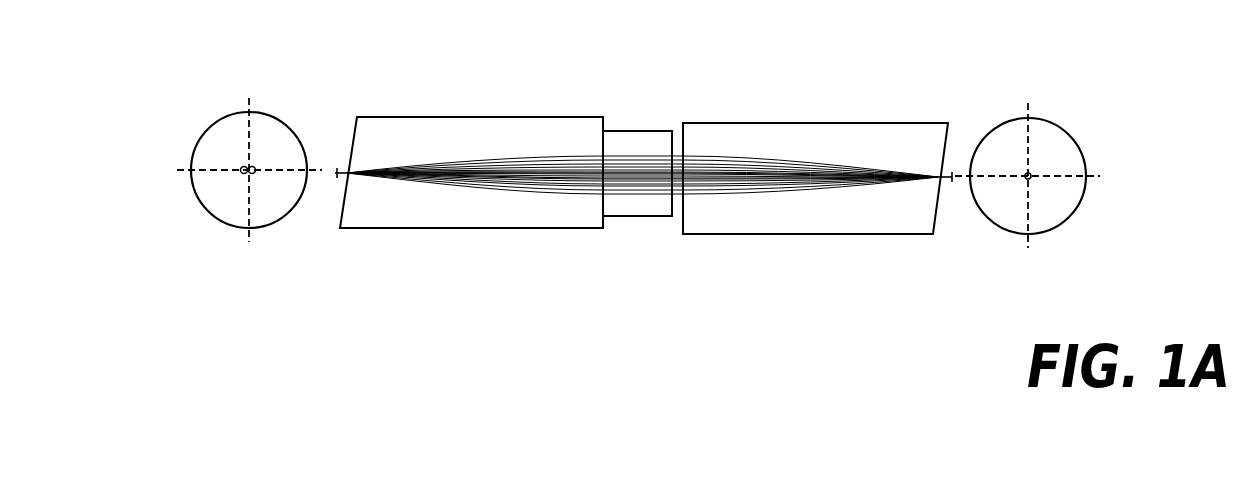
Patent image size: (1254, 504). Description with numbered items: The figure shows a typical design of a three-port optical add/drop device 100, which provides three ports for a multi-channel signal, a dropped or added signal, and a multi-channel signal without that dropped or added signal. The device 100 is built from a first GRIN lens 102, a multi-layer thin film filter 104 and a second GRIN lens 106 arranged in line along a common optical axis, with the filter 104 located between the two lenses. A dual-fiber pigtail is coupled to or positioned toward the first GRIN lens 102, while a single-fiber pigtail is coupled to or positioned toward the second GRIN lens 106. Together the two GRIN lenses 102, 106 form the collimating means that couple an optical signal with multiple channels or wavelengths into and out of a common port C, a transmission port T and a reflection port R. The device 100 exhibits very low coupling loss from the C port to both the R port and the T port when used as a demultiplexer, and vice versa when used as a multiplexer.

The three-port device 100 is at (638, 152).
The first GRIN lens 102 is at (469, 177).
The multi-layer thin film filter 104 is at (637, 177).
The second GRIN lens 106 is at (817, 180).
The common port C is at (239, 158).
The reflection port R is at (258, 158).
The transmission port T is at (1035, 165).